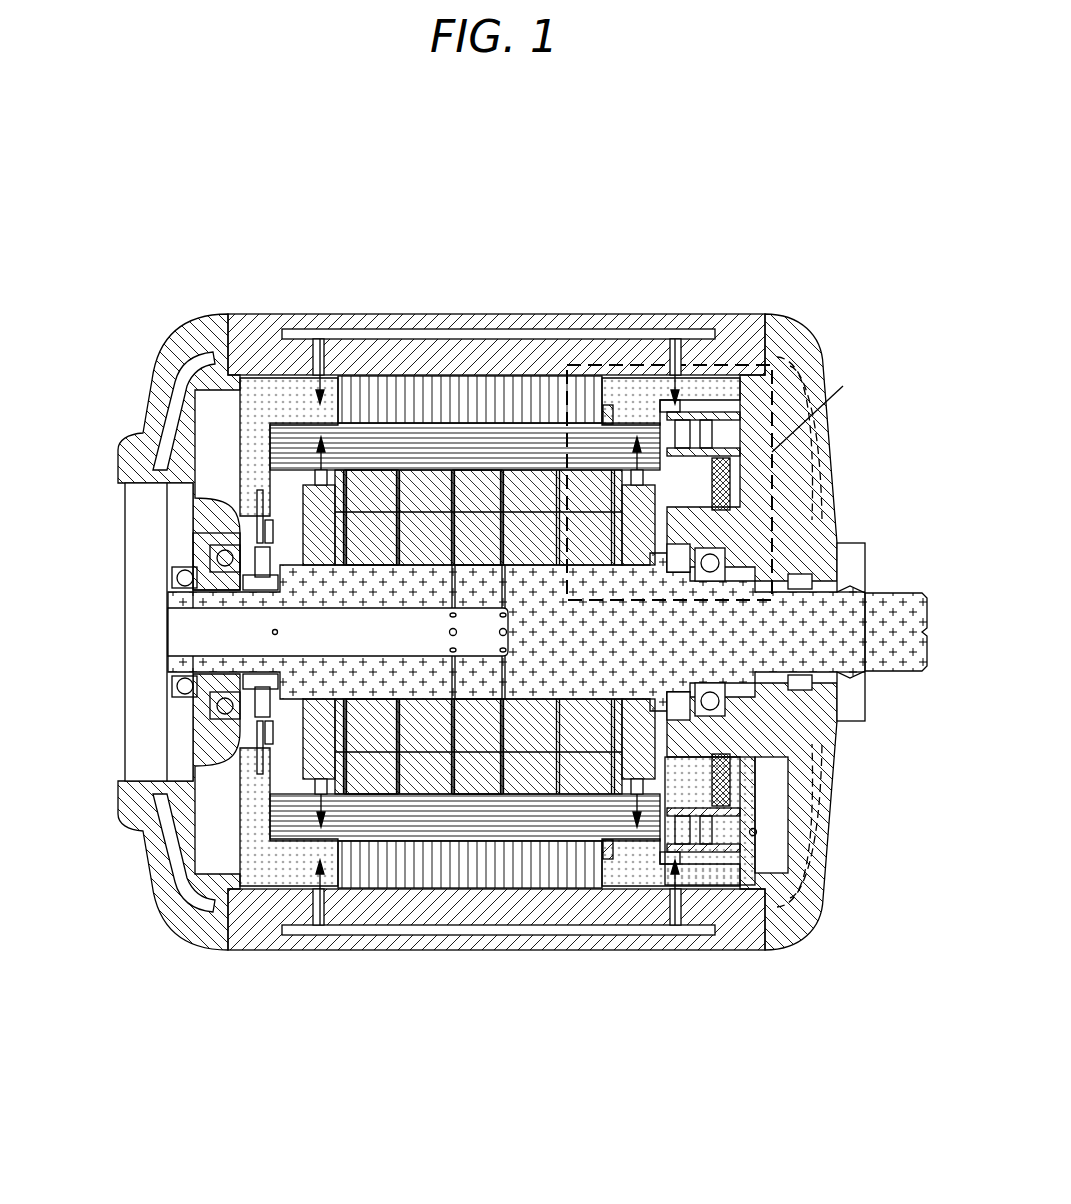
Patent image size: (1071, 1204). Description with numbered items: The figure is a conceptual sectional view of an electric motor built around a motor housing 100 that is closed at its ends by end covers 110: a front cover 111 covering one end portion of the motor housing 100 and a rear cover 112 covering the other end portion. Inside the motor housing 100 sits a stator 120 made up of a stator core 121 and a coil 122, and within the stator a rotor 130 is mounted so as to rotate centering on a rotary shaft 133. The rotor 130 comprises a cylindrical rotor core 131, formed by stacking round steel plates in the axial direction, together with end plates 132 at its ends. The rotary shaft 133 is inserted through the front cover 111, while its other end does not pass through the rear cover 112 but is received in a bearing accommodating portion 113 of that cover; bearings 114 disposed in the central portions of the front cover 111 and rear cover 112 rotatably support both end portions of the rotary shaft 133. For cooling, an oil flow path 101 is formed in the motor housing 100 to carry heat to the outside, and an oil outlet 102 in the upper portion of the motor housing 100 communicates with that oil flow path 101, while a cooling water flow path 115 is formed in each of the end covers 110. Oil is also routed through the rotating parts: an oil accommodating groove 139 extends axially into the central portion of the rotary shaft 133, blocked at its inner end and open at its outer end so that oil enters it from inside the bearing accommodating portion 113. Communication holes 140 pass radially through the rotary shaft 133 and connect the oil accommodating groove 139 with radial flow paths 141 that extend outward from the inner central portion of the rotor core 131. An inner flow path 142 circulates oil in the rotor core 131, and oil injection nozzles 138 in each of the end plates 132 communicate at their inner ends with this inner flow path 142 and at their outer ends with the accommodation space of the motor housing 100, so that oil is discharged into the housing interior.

The motor housing 100 is at (395, 314).
The oil flow path 101 is at (478, 333).
The oil outlet 102 is at (317, 372).
The end covers 110 is at (473, 600).
The front cover 111 is at (802, 320).
The rear cover 112 is at (172, 355).
The bearing accommodating portion 113 is at (212, 533).
The bearings 114 is at (220, 550).
The cooling water flow path 115 is at (160, 850).
The stator 120 is at (497, 717).
The stator core 121 is at (490, 873).
The coil 122 is at (423, 822).
The rotor 130 is at (487, 644).
The rotor core 131 is at (535, 790).
The end plates 132 is at (655, 501).
The rotary shaft 133 is at (893, 593).
The oil injection nozzles 138 is at (240, 733).
The oil accommodating groove 139 is at (186, 636).
The communication holes 140 is at (450, 578).
The radial flow paths 141 is at (455, 530).
The inner flow path 142 is at (362, 512).